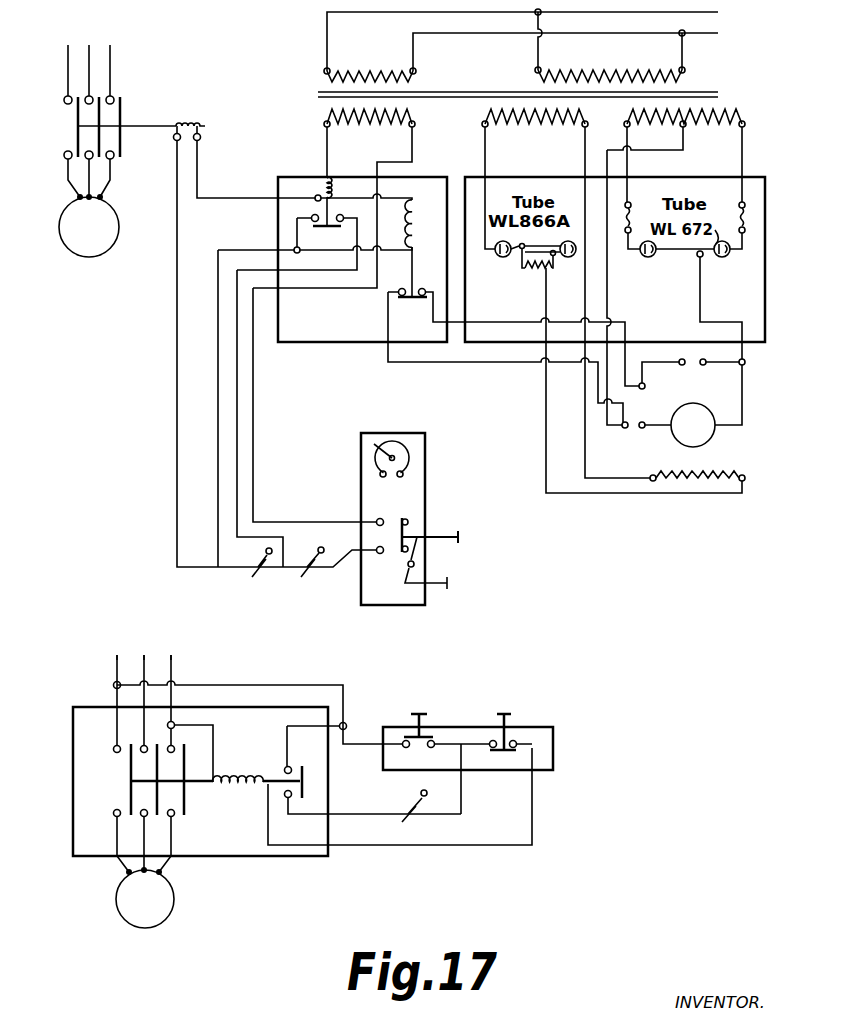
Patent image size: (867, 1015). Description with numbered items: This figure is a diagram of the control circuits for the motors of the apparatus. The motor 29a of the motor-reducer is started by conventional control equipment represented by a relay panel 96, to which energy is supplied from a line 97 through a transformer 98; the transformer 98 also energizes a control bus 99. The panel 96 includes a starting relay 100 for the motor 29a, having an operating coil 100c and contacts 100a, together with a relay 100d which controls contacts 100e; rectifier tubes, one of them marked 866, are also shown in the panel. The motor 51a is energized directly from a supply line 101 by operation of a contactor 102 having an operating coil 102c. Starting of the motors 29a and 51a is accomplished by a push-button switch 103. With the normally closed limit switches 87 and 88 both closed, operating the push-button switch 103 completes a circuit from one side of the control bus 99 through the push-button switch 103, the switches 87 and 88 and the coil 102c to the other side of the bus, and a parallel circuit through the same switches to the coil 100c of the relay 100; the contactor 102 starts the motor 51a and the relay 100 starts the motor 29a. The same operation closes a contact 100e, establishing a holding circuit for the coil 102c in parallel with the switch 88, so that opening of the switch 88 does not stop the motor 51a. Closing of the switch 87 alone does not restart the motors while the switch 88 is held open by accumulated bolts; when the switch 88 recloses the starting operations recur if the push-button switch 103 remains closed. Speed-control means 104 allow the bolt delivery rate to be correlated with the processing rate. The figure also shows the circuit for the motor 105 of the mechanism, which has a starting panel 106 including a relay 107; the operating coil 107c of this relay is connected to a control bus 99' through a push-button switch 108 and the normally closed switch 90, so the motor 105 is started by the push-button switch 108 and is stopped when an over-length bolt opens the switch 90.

The supply line 101 is at (112, 73).
The contactor 102 is at (122, 118).
The operating coil 102c is at (196, 121).
The motor 51a is at (95, 247).
The line 97 is at (713, 13).
The transformer 98 is at (678, 80).
The control bus 99 is at (369, 132).
The relay panel 96 is at (285, 344).
The relay 100d is at (325, 184).
The contact 100e is at (340, 226).
The operating coil 100c is at (422, 198).
The starting relay 100 is at (419, 263).
The relay contact 100a is at (400, 304).
The rectifier tube 866 is at (524, 243).
The motor 29a is at (708, 442).
The speed-control means 104 is at (410, 463).
The push-button switch 103 is at (413, 530).
The limit switch 88 is at (257, 583).
The limit switch 87 is at (308, 583).
The control bus 99' is at (179, 688).
The relay 107 is at (130, 772).
The operating coil 107c is at (222, 788).
The starting panel 106 is at (72, 836).
The motor 105 is at (167, 913).
The push-button switch 108 is at (553, 741).
The switch 90 is at (418, 826).